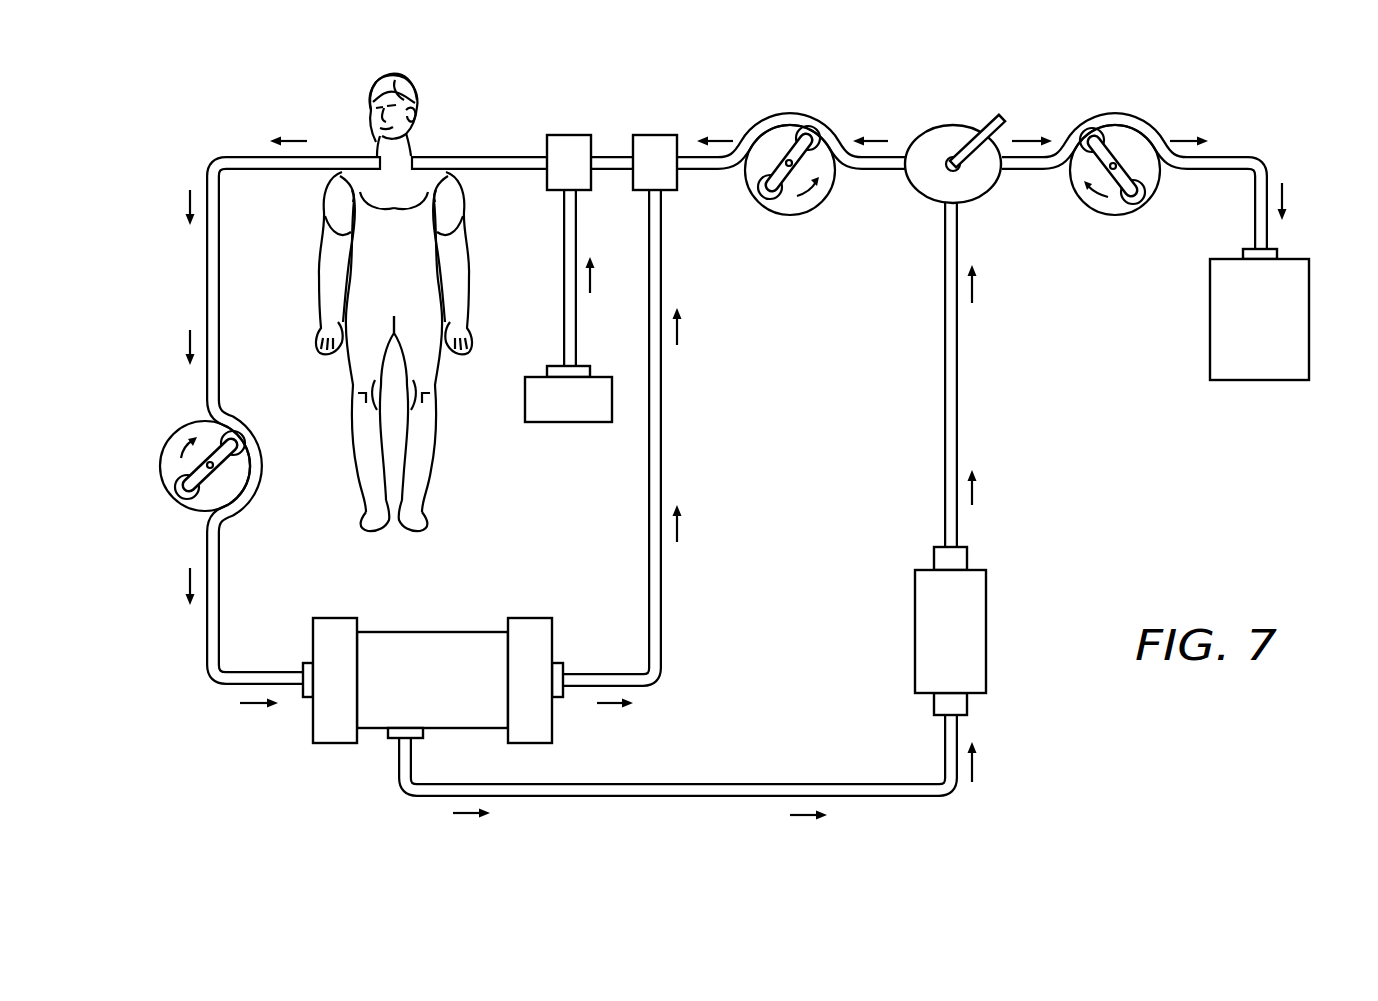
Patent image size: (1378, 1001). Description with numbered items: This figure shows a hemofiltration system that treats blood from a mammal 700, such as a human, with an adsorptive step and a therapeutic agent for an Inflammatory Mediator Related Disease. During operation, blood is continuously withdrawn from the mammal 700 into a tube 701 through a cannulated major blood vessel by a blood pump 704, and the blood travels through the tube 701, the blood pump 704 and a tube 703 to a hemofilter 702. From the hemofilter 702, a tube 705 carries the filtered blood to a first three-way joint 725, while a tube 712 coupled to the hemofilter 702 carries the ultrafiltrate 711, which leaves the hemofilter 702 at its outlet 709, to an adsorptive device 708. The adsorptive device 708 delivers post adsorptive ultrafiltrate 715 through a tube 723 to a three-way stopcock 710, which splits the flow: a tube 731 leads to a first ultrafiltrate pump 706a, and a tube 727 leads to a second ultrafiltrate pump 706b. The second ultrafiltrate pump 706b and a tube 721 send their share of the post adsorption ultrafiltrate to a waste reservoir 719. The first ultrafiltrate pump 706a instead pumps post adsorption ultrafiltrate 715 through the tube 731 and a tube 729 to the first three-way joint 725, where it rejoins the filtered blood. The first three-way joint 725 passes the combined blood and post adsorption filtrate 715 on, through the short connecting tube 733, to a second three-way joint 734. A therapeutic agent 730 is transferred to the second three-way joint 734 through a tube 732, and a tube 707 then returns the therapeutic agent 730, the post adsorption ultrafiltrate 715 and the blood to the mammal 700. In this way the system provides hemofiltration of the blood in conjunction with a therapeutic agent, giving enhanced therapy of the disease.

The mammal 700 is at (448, 210).
The tube 701 is at (207, 300).
The hemofilter 702 is at (435, 632).
The tube 703 is at (207, 632).
The blood pump 704 is at (162, 466).
The tube 705 is at (650, 422).
The first ultrafiltrate pump 706a is at (793, 214).
The second ultrafiltrate pump 706b is at (1115, 215).
The tube 707 is at (470, 154).
The adsorptive device 708 is at (988, 632).
The ultrafiltrate outlet 709 is at (442, 728).
The three-way stopcock 710 is at (950, 127).
The ultrafiltrate 711 is at (398, 768).
The tube 712 is at (607, 800).
The post adsorptive ultrafiltrate 715 is at (958, 395).
The waste reservoir 719 is at (1309, 320).
The tube 721 is at (1233, 155).
The tube 723 is at (945, 327).
The first three-way joint 725 is at (655, 134).
The tube 727 is at (1028, 176).
The tube 729 is at (708, 176).
The therapeutic agent 730 is at (544, 373).
The tube 731 is at (866, 176).
The tube 732 is at (562, 280).
The tubing 733 is at (611, 154).
The second three-way joint 734 is at (568, 134).